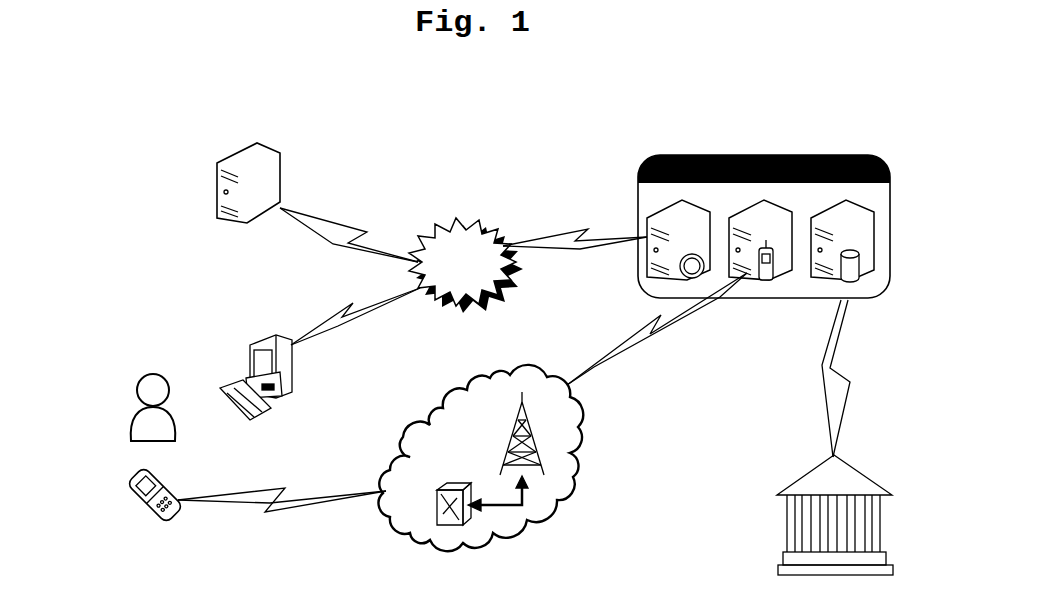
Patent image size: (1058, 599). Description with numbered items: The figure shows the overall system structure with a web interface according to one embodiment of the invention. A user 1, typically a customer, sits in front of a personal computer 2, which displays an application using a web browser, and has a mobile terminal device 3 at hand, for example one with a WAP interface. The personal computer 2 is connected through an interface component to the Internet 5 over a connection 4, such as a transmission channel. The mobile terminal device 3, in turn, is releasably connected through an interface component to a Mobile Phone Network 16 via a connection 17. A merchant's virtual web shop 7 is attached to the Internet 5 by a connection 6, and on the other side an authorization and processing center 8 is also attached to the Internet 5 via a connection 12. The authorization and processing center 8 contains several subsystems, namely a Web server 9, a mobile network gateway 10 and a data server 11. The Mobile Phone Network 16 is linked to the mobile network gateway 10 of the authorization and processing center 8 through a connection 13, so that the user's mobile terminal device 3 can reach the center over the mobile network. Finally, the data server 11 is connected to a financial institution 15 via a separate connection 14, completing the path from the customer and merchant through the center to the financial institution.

The user 1 is at (142, 421).
The personal computer 2 is at (262, 395).
The mobile terminal device 3 is at (148, 511).
The connection 4 is at (355, 323).
The Internet 5 is at (466, 265).
The connection 6 is at (349, 235).
The virtual web shop 7 is at (244, 201).
The authorization and processing center 8 is at (757, 228).
The Web server 9 is at (678, 235).
The mobile network gateway 10 is at (760, 235).
The data server 11 is at (842, 236).
The connection 12 is at (575, 250).
The connection 13 is at (657, 329).
The connection 14 is at (829, 378).
The financial institution 15 is at (824, 524).
The Mobile Phone Network 16 is at (481, 460).
The connection 17 is at (282, 490).